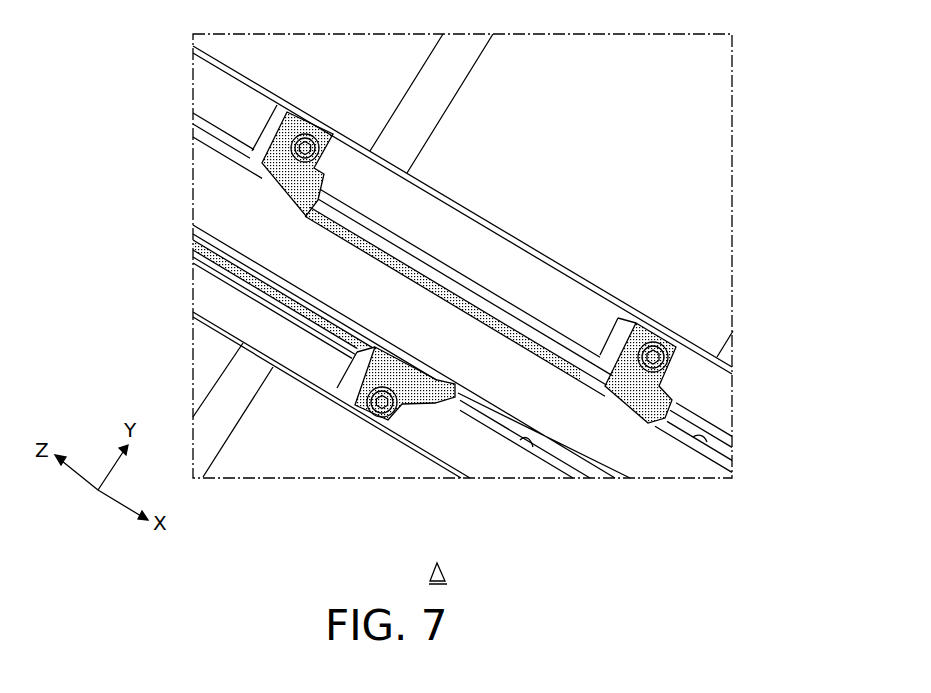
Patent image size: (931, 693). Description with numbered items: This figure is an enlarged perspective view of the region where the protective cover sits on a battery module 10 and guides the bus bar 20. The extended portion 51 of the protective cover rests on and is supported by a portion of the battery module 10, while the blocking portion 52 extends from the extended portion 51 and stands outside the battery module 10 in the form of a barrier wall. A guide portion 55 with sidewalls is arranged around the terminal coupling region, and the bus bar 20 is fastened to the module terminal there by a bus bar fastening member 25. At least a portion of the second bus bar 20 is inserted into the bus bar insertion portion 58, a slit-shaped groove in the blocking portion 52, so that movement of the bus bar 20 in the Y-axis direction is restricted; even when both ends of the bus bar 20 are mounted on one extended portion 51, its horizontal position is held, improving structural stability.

The extended portion 51 is at (212, 84).
The guide portion 55 is at (217, 133).
The bus bar fastening member 25 is at (267, 190).
The blocking portion 52 is at (212, 204).
The bus bar 20 is at (252, 297).
The battery module 10 is at (212, 357).
The bus bar insertion portion 58 is at (700, 445).